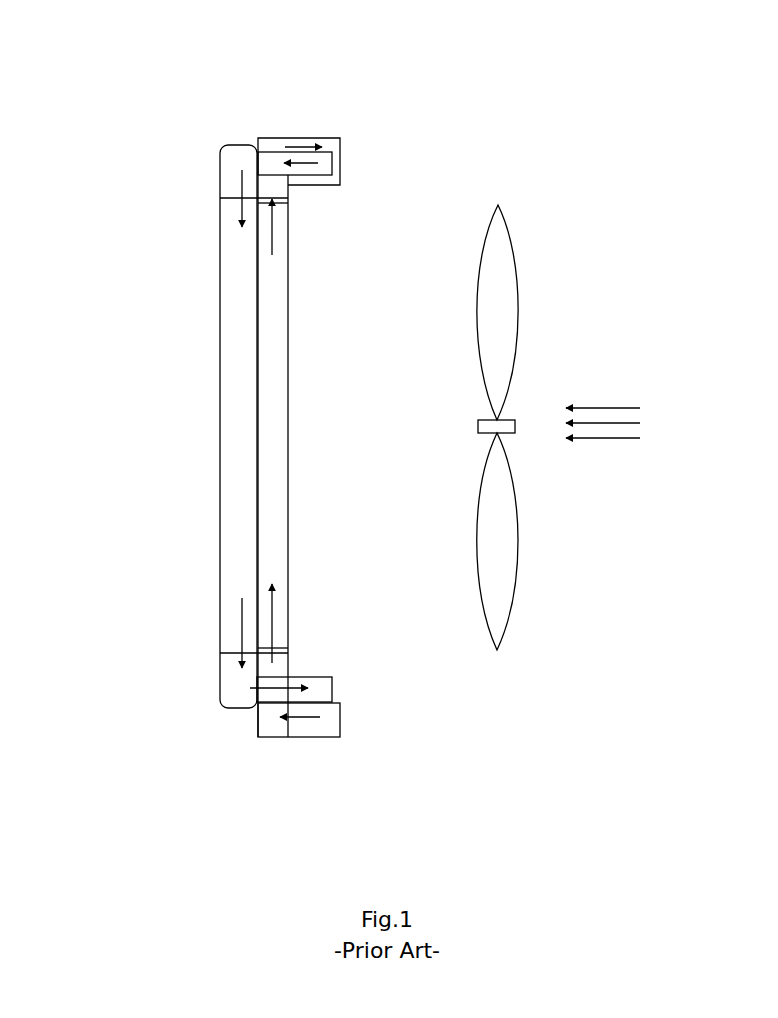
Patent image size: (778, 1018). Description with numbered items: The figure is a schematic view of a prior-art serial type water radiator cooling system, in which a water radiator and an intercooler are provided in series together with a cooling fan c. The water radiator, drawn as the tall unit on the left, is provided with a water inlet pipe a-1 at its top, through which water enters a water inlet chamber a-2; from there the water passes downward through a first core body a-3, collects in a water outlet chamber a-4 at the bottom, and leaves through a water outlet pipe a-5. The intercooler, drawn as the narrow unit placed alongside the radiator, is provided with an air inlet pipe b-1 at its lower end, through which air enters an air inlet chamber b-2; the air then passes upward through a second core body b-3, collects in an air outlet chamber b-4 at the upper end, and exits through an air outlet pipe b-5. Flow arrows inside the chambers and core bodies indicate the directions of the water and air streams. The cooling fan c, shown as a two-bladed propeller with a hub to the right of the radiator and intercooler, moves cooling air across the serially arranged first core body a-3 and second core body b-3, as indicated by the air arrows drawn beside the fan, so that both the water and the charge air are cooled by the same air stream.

The water inlet pipe a-1 is at (272, 148).
The water inlet chamber a-2 is at (235, 182).
The first core body a-3 is at (237, 372).
The water outlet chamber a-4 is at (237, 673).
The water outlet pipe a-5 is at (310, 690).
The air inlet pipe b-1 is at (303, 723).
The air inlet chamber b-2 is at (275, 723).
The second core body b-3 is at (275, 317).
The air outlet chamber b-4 is at (278, 148).
The air outlet pipe b-5 is at (325, 138).
The cooling fan c is at (503, 310).